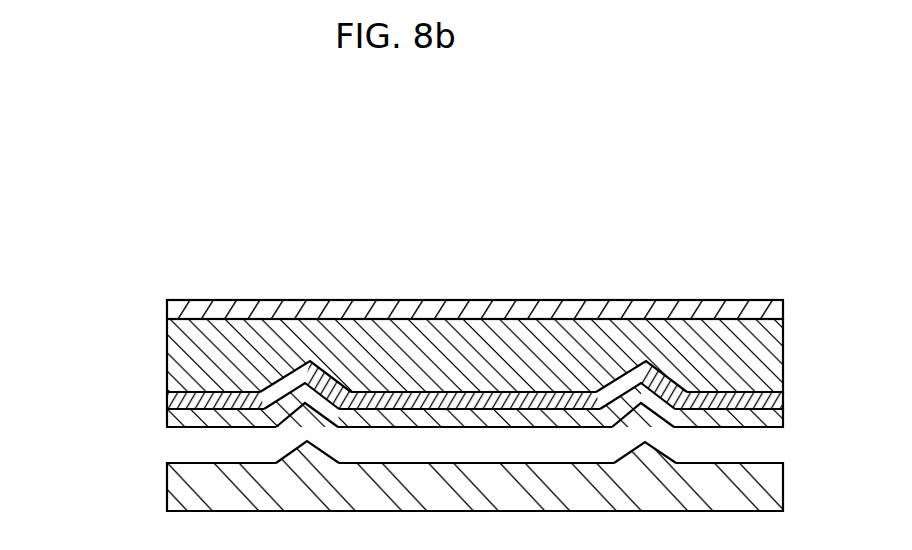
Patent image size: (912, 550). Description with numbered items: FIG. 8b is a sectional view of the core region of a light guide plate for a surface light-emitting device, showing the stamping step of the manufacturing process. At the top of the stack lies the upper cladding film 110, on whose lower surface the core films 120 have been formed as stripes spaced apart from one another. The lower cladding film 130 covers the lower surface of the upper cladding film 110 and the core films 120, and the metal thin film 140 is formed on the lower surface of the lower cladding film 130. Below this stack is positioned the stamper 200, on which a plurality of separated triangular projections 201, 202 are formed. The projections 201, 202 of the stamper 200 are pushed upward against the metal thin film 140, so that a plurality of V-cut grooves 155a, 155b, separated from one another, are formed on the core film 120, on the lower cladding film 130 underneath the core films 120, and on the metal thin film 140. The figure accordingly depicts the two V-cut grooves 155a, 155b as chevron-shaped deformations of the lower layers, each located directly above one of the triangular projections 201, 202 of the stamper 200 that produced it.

The upper cladding film 110 is at (178, 315).
The core film 120 is at (185, 357).
The lower cladding film 130 is at (178, 397).
The metal thin film 140 is at (180, 424).
The V-cut groove 155a is at (276, 375).
The V-cut groove 155b is at (666, 378).
The stamper 200 is at (152, 489).
The triangular projection 201 is at (293, 452).
The triangular projection 202 is at (653, 458).